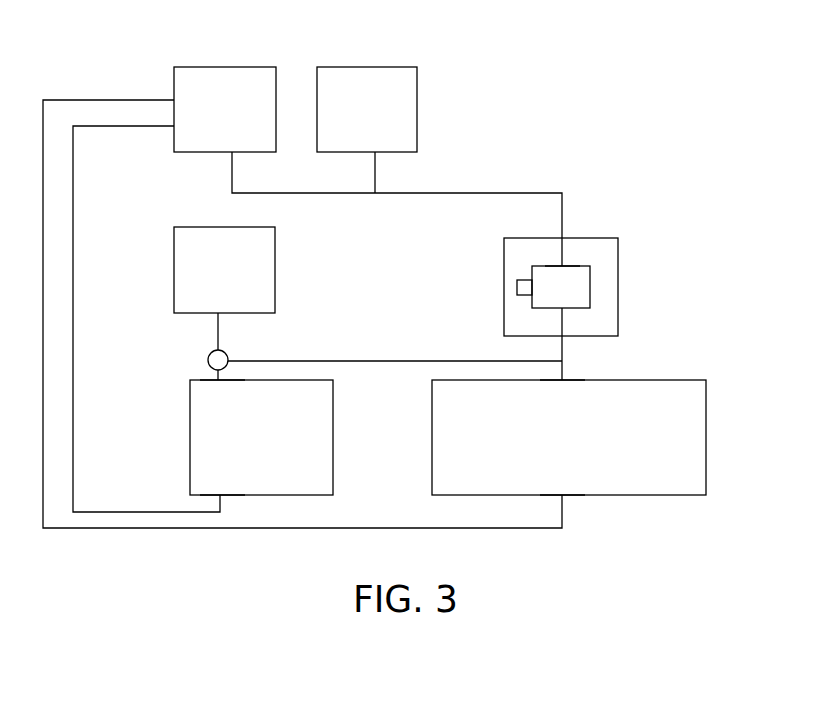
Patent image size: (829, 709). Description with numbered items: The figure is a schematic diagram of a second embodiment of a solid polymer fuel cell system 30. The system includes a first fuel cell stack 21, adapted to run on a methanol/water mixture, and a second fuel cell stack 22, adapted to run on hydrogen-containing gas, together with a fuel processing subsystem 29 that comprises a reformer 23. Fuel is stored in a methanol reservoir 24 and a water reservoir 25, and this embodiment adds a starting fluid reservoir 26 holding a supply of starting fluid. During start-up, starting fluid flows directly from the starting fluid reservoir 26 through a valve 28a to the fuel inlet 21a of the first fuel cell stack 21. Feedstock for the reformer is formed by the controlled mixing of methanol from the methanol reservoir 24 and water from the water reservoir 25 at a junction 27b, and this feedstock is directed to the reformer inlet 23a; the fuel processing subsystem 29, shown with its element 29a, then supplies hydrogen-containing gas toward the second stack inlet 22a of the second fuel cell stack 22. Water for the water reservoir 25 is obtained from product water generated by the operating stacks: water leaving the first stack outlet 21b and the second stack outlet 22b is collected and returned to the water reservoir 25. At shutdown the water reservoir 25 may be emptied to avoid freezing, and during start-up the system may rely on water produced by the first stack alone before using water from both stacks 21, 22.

The fuel cell system 30 is at (718, 60).
The first fuel cell stack 21 is at (202, 417).
The fuel inlet 21a is at (225, 385).
The first stack outlet 21b is at (225, 500).
The second fuel cell stack 22 is at (667, 392).
The second stack inlet 22a is at (564, 383).
The second stack outlet 22b is at (564, 497).
The reformer 23 is at (578, 288).
The reformer inlet 23a is at (565, 260).
The methanol reservoir 24 is at (397, 83).
The water reservoir 25 is at (247, 77).
The starting fluid reservoir 26 is at (190, 243).
The junction 27b is at (380, 192).
The valve 28a is at (210, 355).
The fuel processing subsystem 29 is at (513, 251).
The switch control terminal 29a is at (517, 288).